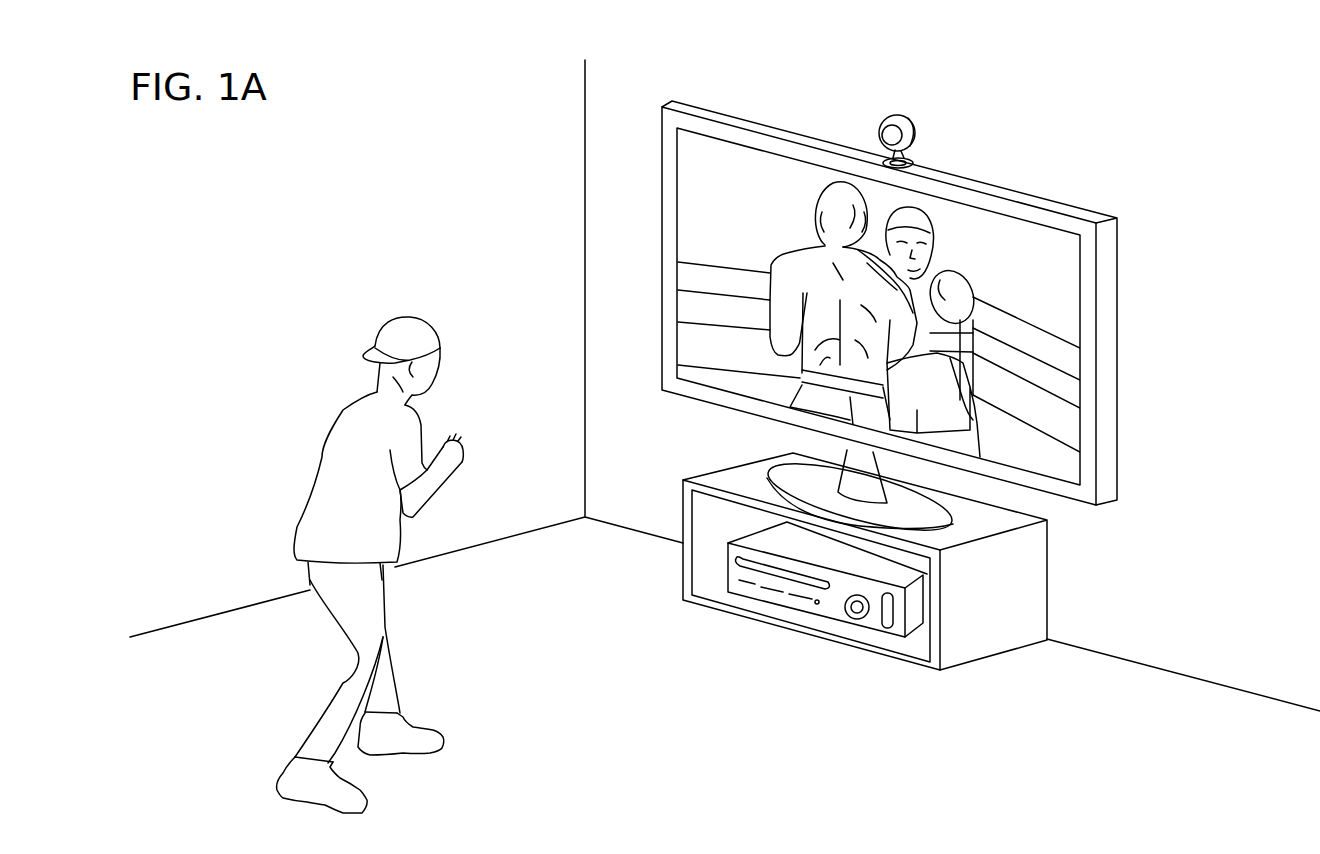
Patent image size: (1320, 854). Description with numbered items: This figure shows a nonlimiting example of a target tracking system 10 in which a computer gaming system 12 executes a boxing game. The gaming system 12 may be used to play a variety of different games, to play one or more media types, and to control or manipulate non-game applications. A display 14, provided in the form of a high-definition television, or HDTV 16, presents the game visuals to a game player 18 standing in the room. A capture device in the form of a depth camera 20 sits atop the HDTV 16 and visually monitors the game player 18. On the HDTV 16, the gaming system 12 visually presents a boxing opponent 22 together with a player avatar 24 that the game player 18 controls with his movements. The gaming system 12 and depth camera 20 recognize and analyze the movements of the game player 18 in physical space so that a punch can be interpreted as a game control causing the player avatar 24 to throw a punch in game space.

The target tracking system 10 is at (989, 80).
The computer gaming system 12 is at (833, 618).
The display 14 is at (1080, 425).
The HDTV 16 is at (1118, 303).
The game player 18 is at (395, 667).
The depth camera 20 is at (917, 135).
The boxing opponent 22 is at (935, 247).
The player avatar 24 is at (773, 262).